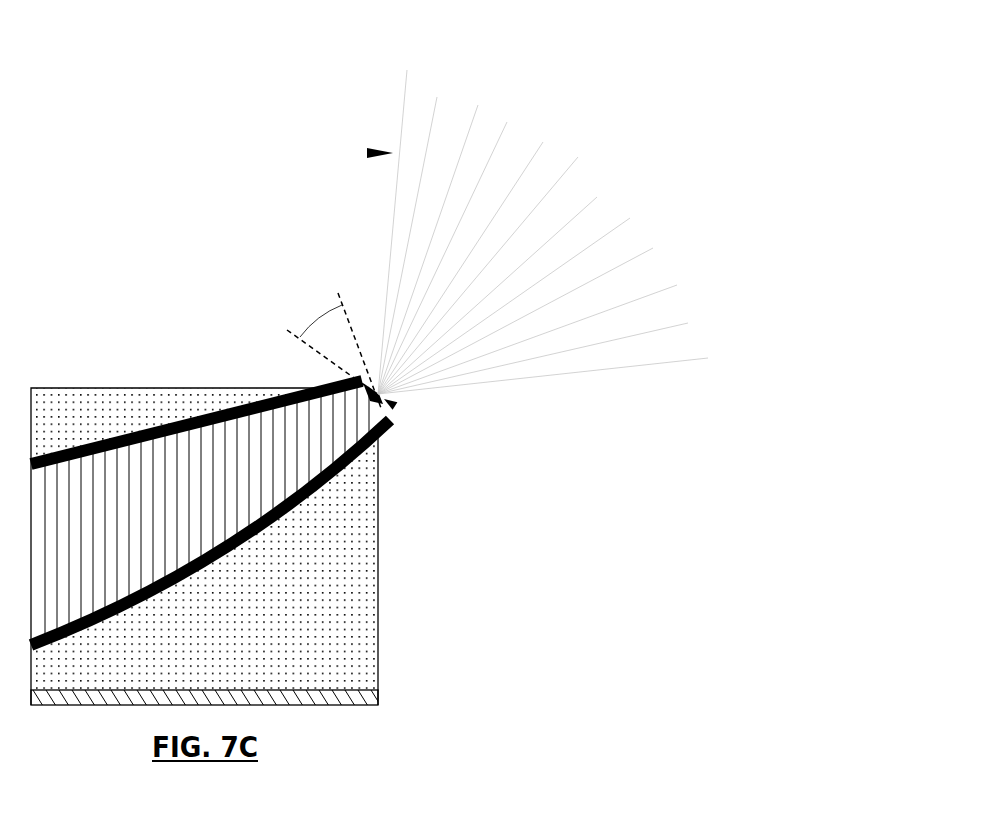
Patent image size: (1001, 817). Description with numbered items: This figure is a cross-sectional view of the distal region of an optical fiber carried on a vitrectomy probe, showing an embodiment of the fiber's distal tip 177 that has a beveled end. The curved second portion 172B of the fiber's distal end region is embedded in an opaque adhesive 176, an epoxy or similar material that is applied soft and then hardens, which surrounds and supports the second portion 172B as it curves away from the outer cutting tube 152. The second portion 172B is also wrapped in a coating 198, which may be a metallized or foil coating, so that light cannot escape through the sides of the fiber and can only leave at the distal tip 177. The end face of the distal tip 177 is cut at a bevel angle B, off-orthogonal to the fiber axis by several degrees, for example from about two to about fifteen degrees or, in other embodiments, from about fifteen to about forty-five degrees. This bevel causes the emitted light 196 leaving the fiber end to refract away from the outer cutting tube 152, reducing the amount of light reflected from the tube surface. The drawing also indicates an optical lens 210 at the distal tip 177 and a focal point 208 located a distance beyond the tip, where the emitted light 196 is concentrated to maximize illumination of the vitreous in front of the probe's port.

The outer cutting tube 152 is at (380, 702).
The opaque adhesive 176 is at (108, 403).
The second portion 172B is at (218, 400).
The distal tip 177 is at (366, 394).
The coating 198 is at (325, 478).
The focal point 208 is at (395, 406).
The optical lens 210 is at (543, 232).
The emitted light 196 is at (367, 153).
The bevel angle B is at (334, 350).